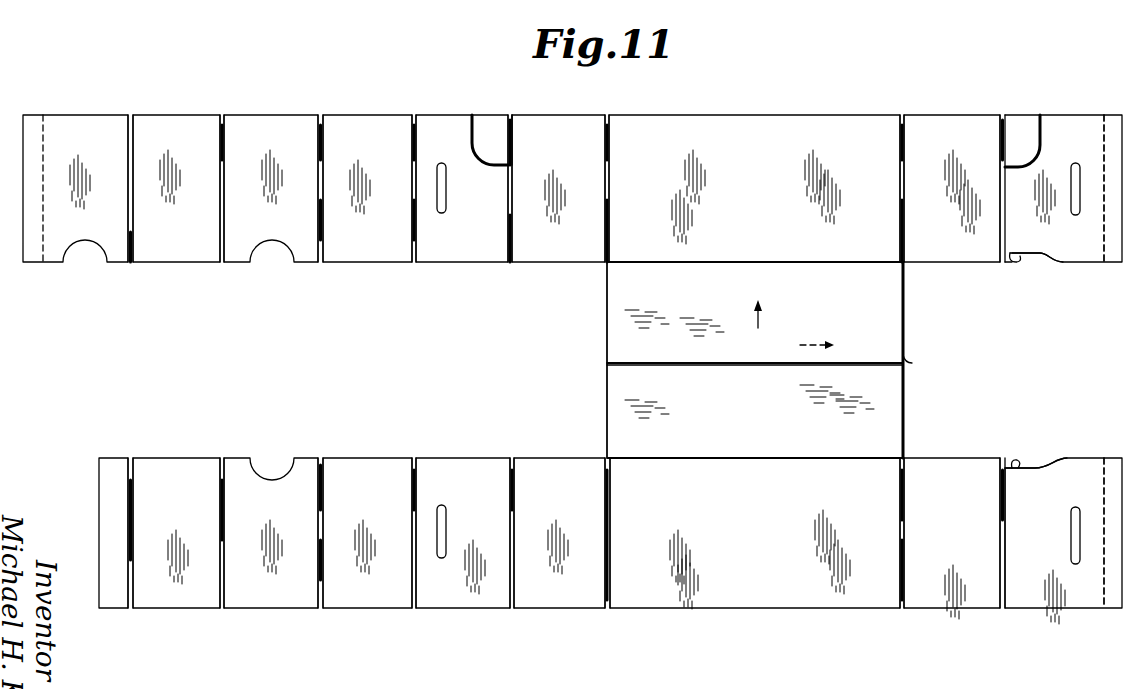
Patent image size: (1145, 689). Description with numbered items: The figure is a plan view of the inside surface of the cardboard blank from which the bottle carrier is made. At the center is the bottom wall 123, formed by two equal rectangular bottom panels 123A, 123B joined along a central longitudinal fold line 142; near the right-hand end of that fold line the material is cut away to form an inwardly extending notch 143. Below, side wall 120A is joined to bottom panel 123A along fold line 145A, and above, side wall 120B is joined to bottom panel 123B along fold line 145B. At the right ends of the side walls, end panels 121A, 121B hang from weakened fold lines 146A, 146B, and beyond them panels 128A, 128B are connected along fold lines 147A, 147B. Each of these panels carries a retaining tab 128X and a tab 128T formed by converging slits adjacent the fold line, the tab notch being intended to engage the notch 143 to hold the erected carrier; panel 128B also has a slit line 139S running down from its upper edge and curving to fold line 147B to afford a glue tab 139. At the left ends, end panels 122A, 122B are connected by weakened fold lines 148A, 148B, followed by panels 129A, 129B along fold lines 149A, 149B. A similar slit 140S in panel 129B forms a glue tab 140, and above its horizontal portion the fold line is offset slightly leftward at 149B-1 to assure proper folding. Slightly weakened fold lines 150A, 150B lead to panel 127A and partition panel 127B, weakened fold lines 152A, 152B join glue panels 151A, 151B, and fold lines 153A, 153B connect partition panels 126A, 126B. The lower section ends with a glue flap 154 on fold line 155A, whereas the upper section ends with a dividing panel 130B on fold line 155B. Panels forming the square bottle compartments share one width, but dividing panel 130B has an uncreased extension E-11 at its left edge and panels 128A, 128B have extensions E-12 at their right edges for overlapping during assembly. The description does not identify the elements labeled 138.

The extension E-11 is at (30, 125).
The extension E-12 is at (1110, 263).
The side wall 120A is at (727, 595).
The side wall 120B is at (723, 130).
The end panel 121A is at (928, 598).
The end panel 121B is at (922, 131).
The end panel 122A is at (567, 595).
The end panel 122B is at (543, 124).
The bottom wall 123 is at (607, 384).
The bottom panel 123A is at (882, 430).
The bottom panel 123B is at (880, 304).
The partition panel 126A is at (183, 594).
The partition panel 126B is at (148, 128).
The panel 127A is at (361, 594).
The partition panel 127B is at (333, 128).
The panel 128A is at (1028, 598).
The panel 128B is at (1085, 127).
The tab 128T is at (1013, 264).
The retaining tab 128X is at (1025, 256).
The panel 129A is at (470, 593).
The panel 129B is at (426, 120).
The dividing panel 130B is at (65, 128).
The slot 138 is at (447, 203).
The glue tab 139 is at (1013, 128).
The slit line 139S is at (1038, 127).
The tab 140 is at (482, 127).
The slit 140S is at (472, 137).
The central longitudinal fold line 142 is at (699, 364).
The notch 143 is at (906, 363).
The fold line 145A is at (710, 457).
The fold line 145B is at (707, 262).
The weakened fold line 146A is at (902, 488).
The weakened fold line 146B is at (902, 233).
The fold line 147A is at (1001, 487).
The fold line 147B is at (1000, 224).
The weakened fold line 148A is at (610, 485).
The weakened fold line 148B is at (609, 187).
The fold line 149A is at (513, 478).
The fold line 149B is at (512, 226).
The offset portion of fold line 149B-1 is at (510, 128).
The slightly weakened fold line 150A is at (416, 474).
The slightly weakened fold line 150B is at (413, 240).
The glue panel 151A is at (273, 588).
The glue panel 151B is at (236, 128).
The weakened fold line 152A is at (323, 478).
The weakened fold line 152B is at (318, 237).
The fold line 153A is at (223, 478).
The fold line 153B is at (220, 232).
The glue flap 154 is at (110, 594).
The fold line 155A is at (133, 478).
The fold line 155B is at (130, 250).